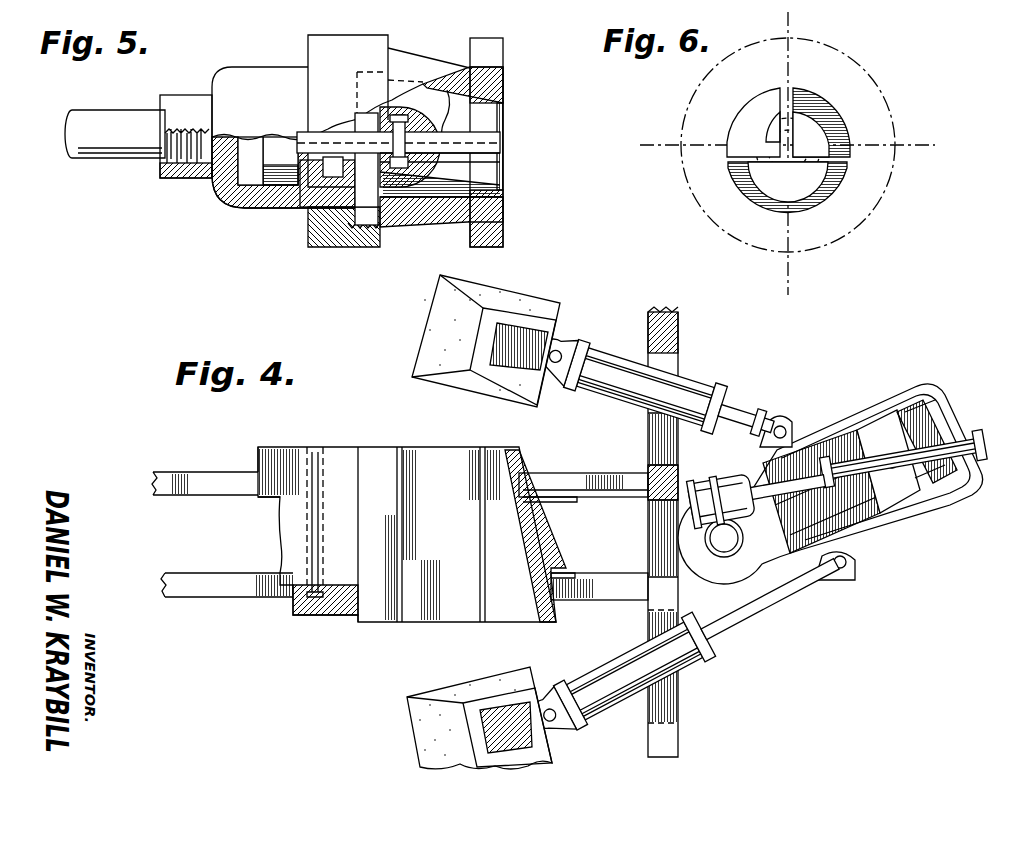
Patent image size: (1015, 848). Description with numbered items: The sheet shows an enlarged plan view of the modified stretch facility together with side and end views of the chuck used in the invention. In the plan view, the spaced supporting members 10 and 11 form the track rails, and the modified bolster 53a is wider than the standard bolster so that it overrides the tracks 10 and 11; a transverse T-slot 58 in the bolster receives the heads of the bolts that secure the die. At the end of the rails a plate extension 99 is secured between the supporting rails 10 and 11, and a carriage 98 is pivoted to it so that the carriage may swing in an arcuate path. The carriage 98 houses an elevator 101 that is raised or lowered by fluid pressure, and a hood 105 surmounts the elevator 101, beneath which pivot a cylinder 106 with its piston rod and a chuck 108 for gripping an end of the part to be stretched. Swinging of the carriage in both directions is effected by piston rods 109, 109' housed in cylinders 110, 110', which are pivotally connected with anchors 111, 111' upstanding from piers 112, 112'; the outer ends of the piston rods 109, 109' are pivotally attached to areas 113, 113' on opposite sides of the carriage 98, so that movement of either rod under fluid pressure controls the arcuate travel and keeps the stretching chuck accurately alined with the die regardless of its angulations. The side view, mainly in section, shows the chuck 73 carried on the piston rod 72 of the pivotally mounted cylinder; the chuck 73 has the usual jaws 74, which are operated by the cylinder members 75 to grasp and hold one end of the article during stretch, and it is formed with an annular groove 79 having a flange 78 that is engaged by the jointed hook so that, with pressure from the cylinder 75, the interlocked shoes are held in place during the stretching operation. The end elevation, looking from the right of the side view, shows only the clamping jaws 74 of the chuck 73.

In FIG. 4, the spaced supporting member 10 is at (208, 600).
In FIG. 4, the spaced supporting member 11 is at (206, 478).
In FIG. 4, the modified bolster 53a is at (416, 460).
In FIG. 4, the T-slot 58 is at (318, 487).
In FIG. 5, the piston rod 72 is at (116, 150).
In FIG. 5, the chuck 73 is at (506, 82).
In FIG. 6, the chuck 73 is at (861, 54).
In FIG. 5, the jaws 74 is at (488, 140).
In FIG. 6, the jaws 74 is at (750, 118).
In FIG. 5, the cylinder member 75 is at (244, 202).
In FIG. 5, the flange 78 is at (503, 230).
In FIG. 5, the annular groove 79 is at (466, 229).
In FIG. 4, the carriage 98 is at (943, 490).
In FIG. 4, the upper plate extension 99 is at (644, 533).
In FIG. 4, the elevator 101 is at (944, 412).
In FIG. 4, the hood 105 is at (874, 414).
In FIG. 4, the cylinder 106 is at (967, 438).
In FIG. 4, the chuck 108 is at (708, 476).
In FIG. 4, the piston rod 109 is at (770, 603).
In FIG. 4, the piston rod 109' is at (756, 409).
In FIG. 4, the cylinder 110 is at (634, 671).
In FIG. 4, the cylinder 110' is at (656, 387).
In FIG. 4, the anchor 111 is at (549, 702).
In FIG. 4, the anchor 111' is at (576, 350).
In FIG. 4, the pier 112 is at (452, 718).
In FIG. 4, the pier 112' is at (460, 341).
In FIG. 4, the attachment area 113 is at (865, 565).
In FIG. 4, the attachment area 113' is at (805, 424).